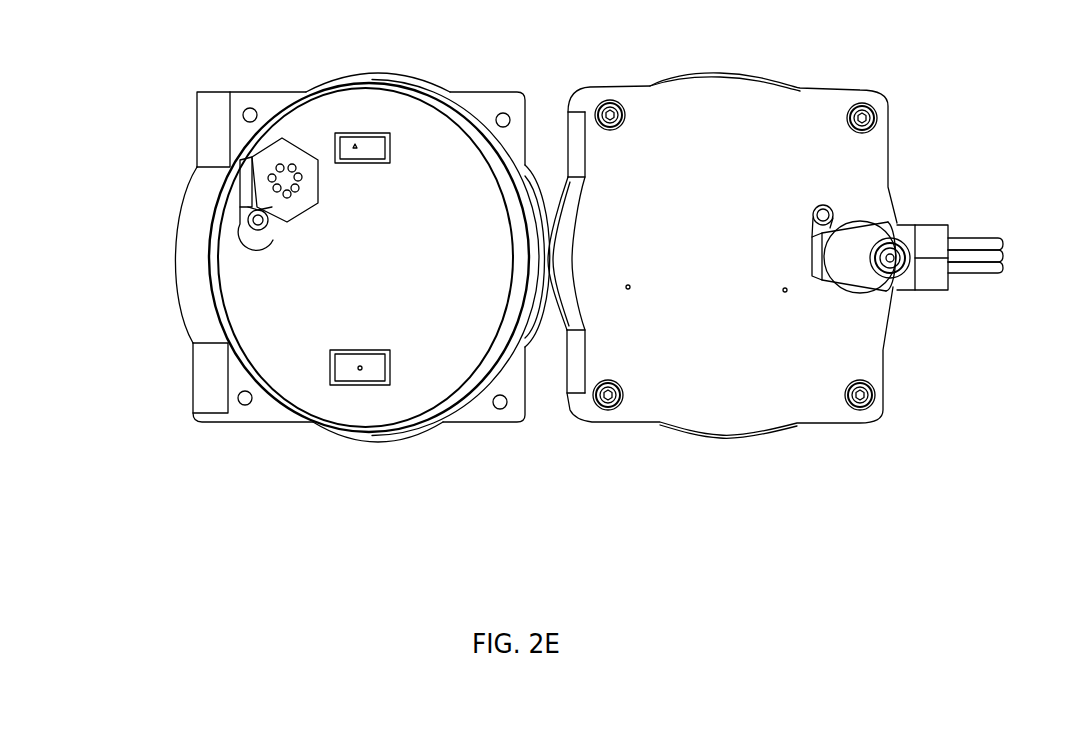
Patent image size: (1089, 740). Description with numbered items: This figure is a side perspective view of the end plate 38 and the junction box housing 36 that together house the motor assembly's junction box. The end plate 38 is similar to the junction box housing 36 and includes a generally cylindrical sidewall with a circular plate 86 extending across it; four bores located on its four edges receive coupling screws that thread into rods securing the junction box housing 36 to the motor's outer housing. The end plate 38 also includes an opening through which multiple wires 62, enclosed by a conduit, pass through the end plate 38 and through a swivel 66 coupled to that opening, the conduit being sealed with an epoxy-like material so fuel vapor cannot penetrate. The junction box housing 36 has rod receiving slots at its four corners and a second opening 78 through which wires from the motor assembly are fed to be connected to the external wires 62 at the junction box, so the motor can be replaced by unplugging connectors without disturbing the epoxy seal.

The junction box housing 36 is at (248, 470).
The end plate 38 is at (720, 358).
The wires 62 is at (954, 258).
The swivel 66 is at (859, 283).
The second opening 78 is at (266, 191).
The circular plate 86 is at (410, 403).